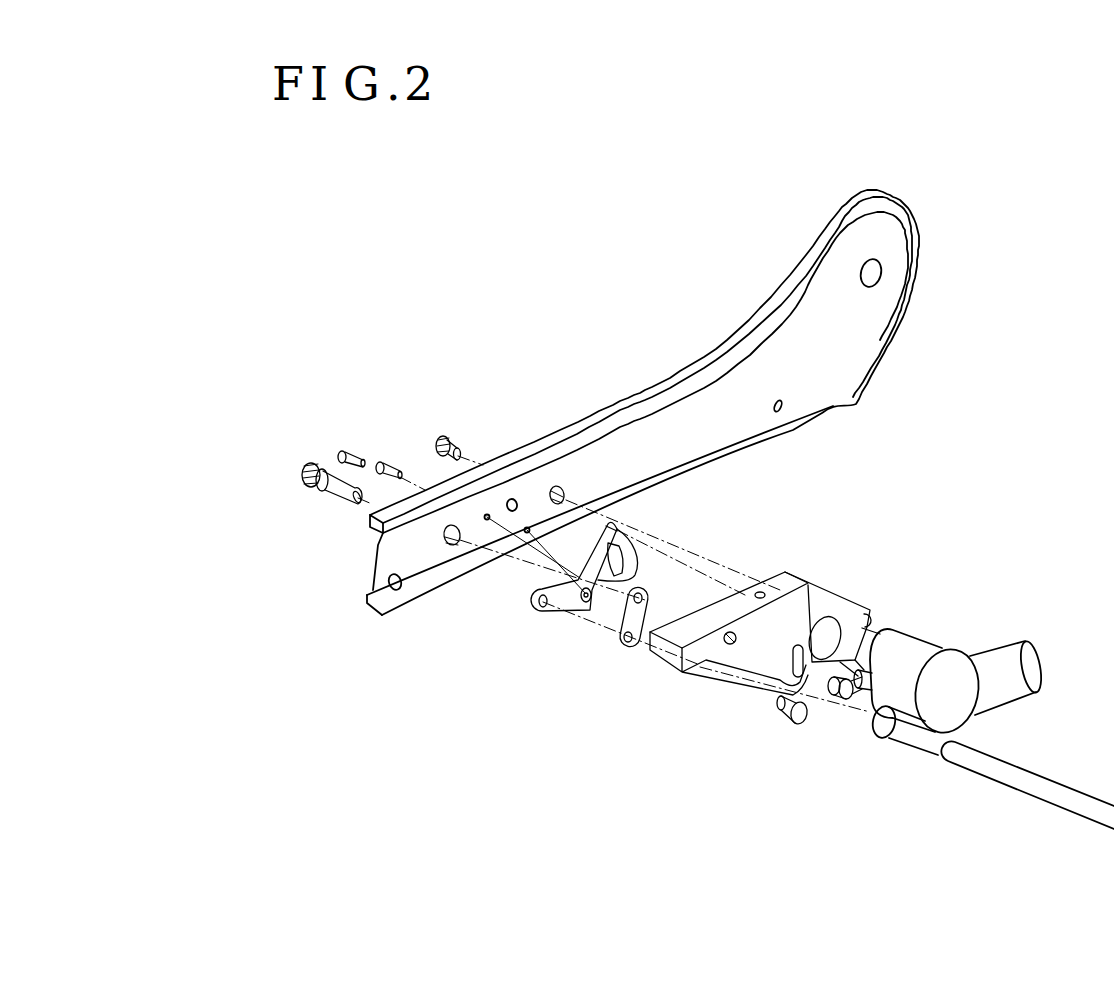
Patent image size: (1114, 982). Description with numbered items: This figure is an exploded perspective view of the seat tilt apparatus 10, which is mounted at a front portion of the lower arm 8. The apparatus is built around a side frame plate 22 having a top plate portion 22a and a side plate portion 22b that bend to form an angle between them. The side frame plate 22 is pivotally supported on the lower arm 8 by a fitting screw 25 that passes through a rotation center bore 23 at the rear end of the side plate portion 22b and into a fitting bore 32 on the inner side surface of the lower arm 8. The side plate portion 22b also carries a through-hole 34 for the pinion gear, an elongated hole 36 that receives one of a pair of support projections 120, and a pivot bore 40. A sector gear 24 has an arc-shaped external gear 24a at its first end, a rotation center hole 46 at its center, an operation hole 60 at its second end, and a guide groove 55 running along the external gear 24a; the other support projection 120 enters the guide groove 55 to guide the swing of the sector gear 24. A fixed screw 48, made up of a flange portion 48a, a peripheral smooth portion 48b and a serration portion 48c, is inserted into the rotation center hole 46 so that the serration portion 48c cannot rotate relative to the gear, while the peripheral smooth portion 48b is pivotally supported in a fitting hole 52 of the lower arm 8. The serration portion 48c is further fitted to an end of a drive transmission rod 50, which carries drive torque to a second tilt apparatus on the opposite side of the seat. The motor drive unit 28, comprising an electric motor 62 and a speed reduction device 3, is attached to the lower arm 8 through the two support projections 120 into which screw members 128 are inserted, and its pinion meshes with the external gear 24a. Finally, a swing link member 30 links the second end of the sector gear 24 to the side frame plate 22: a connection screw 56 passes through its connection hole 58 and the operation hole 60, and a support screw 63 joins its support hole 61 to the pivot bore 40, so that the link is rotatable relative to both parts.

The lower arm 8 is at (850, 372).
The seat tilt apparatus 10 is at (835, 530).
The side frame plate 22 is at (790, 582).
The top plate portion 22a is at (733, 587).
The side plate portion 22b is at (852, 601).
The rotation center bore 23 is at (870, 620).
The sector gear 24 is at (601, 581).
The external gear 24a is at (640, 558).
The fitting screw 25 is at (452, 440).
The motor drive unit 28 is at (957, 642).
The speed reduction device 3 is at (948, 645).
The electric motor 62 is at (1000, 652).
The swing link member 30 is at (620, 651).
The fitting bore 32 is at (563, 486).
The through-hole 34 is at (831, 616).
The elongated hole 36 is at (737, 640).
The pivot bore 40 is at (729, 669).
The rotation center hole 46 is at (586, 603).
The fixed screw 48 is at (288, 524).
The flange portion 48a is at (303, 484).
The peripheral smooth portion 48b is at (316, 488).
The serration portion 48c is at (323, 522).
The drive transmission rod 50 is at (1073, 803).
The fitting hole 52 is at (451, 547).
The guide groove 55 is at (620, 553).
The connection screw 56 is at (795, 724).
The connection hole 58 is at (624, 644).
The operation hole 60 is at (538, 602).
The support hole 61 is at (766, 605).
The support screw 63 is at (850, 706).
The support projections 120 is at (858, 702).
The screw members 128 is at (393, 462).